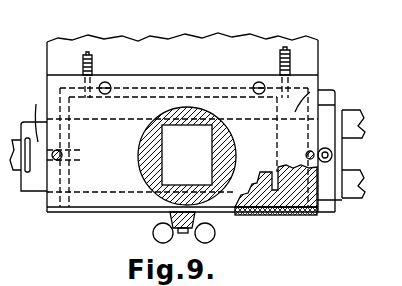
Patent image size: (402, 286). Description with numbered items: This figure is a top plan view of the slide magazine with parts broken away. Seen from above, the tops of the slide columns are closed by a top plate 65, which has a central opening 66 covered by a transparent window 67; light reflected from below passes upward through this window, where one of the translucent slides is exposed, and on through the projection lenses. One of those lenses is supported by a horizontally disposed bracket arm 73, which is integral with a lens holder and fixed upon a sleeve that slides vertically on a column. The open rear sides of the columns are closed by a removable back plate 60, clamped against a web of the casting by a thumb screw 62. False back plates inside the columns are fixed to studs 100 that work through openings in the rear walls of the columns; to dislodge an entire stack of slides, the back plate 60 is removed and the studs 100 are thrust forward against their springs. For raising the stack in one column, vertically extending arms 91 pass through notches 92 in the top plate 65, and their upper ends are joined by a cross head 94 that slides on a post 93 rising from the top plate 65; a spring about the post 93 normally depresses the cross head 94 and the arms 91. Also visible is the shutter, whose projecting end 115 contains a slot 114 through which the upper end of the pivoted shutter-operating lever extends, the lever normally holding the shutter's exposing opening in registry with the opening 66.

The back plate 60 is at (86, 214).
The thumb screw 62 is at (214, 232).
The top plate 65 is at (310, 92).
The central opening 66 is at (212, 158).
The transparent window 67 is at (186, 108).
The bracket arm 73 is at (268, 190).
The arms 91 is at (337, 200).
The notches 92 is at (360, 176).
The post 93 is at (350, 128).
The cross head 94 is at (337, 108).
The studs 100 is at (93, 56).
The slot 114 is at (40, 103).
The projecting end 115 is at (32, 193).